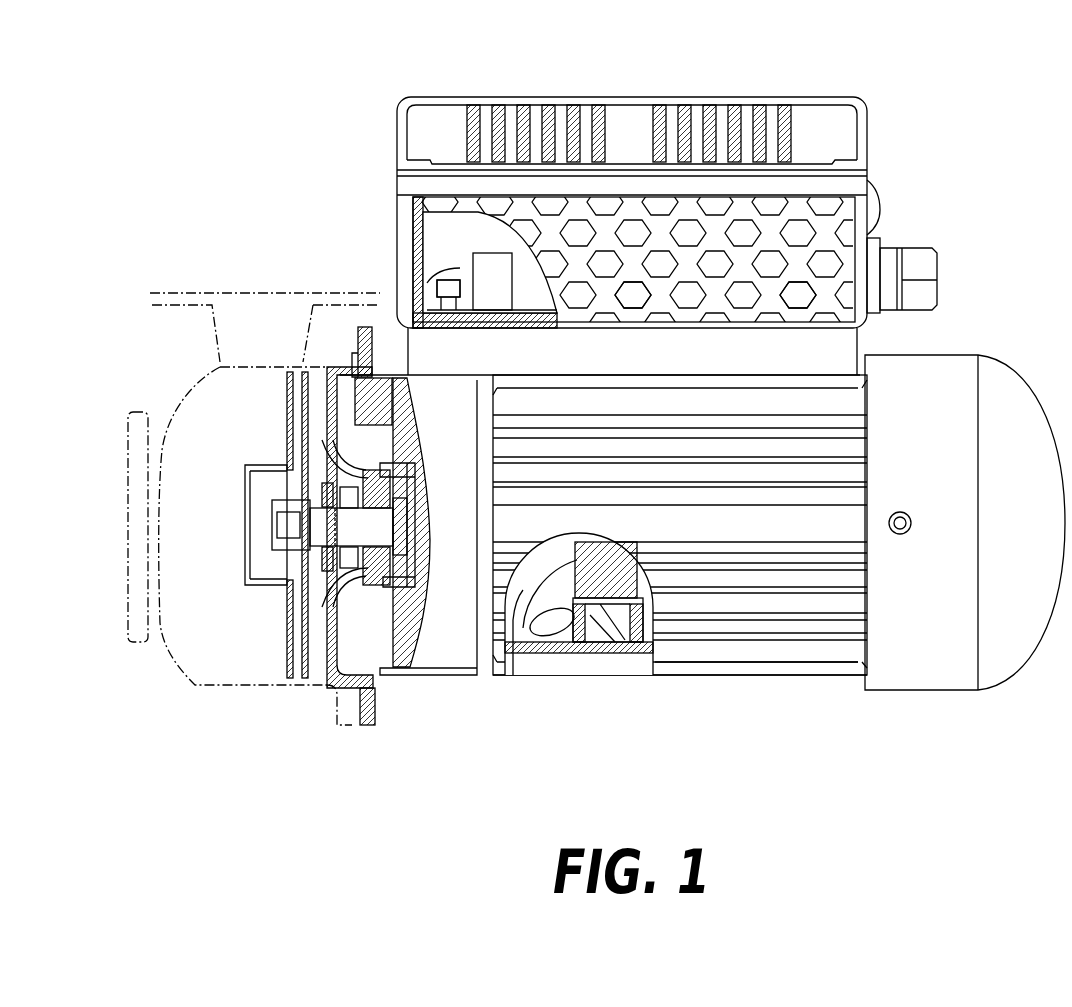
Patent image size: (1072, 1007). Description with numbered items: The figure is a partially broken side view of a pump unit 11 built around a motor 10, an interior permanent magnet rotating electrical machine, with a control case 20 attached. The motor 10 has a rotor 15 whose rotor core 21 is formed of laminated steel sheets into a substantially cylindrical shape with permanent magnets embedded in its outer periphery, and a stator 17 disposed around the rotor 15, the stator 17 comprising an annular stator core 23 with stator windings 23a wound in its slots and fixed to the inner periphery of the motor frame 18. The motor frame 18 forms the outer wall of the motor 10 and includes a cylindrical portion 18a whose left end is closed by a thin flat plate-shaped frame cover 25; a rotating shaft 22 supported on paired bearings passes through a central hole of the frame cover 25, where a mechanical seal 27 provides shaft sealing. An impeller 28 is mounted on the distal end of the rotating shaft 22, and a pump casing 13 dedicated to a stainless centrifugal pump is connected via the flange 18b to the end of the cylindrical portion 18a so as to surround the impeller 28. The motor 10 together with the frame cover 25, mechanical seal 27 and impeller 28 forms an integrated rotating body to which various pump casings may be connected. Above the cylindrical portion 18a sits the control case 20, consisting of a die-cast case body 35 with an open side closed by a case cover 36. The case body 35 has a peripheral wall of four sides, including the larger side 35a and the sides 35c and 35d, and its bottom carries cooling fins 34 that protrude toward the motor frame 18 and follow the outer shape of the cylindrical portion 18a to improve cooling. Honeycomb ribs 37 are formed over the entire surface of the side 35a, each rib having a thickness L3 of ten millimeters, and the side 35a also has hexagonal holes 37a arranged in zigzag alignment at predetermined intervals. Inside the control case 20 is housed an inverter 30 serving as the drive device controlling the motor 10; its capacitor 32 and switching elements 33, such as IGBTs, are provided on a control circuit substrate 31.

The motor 10 is at (772, 677).
The pump unit 11 is at (243, 200).
The pump casing 13 is at (187, 393).
The rotor 15 is at (513, 675).
The stator 17 is at (592, 655).
The motor frame 18 is at (828, 677).
The cylindrical portion 18a is at (717, 673).
The flange 18b is at (372, 722).
The control case 20 is at (867, 100).
The rotor core 21 is at (610, 565).
The rotating shaft 22 is at (380, 522).
The stator core 23 is at (627, 653).
The stator windings 23a is at (555, 653).
The frame cover 25 is at (367, 637).
The mechanical seal 27 is at (335, 570).
The impeller 28 is at (287, 425).
The inverter 30 is at (437, 293).
The control circuit substrate 31 is at (508, 313).
The capacitor 32 is at (410, 273).
The switching elements 33 is at (466, 313).
The cooling fins 34 is at (866, 345).
The case body 35 is at (397, 253).
The side 35a is at (568, 218).
The side 35c is at (397, 227).
The side 35d is at (883, 242).
The case cover 36 is at (447, 97).
The honeycomb ribs 37 is at (635, 208).
The hexagonal holes 37a is at (785, 297).
The thickness L3 is at (613, 297).